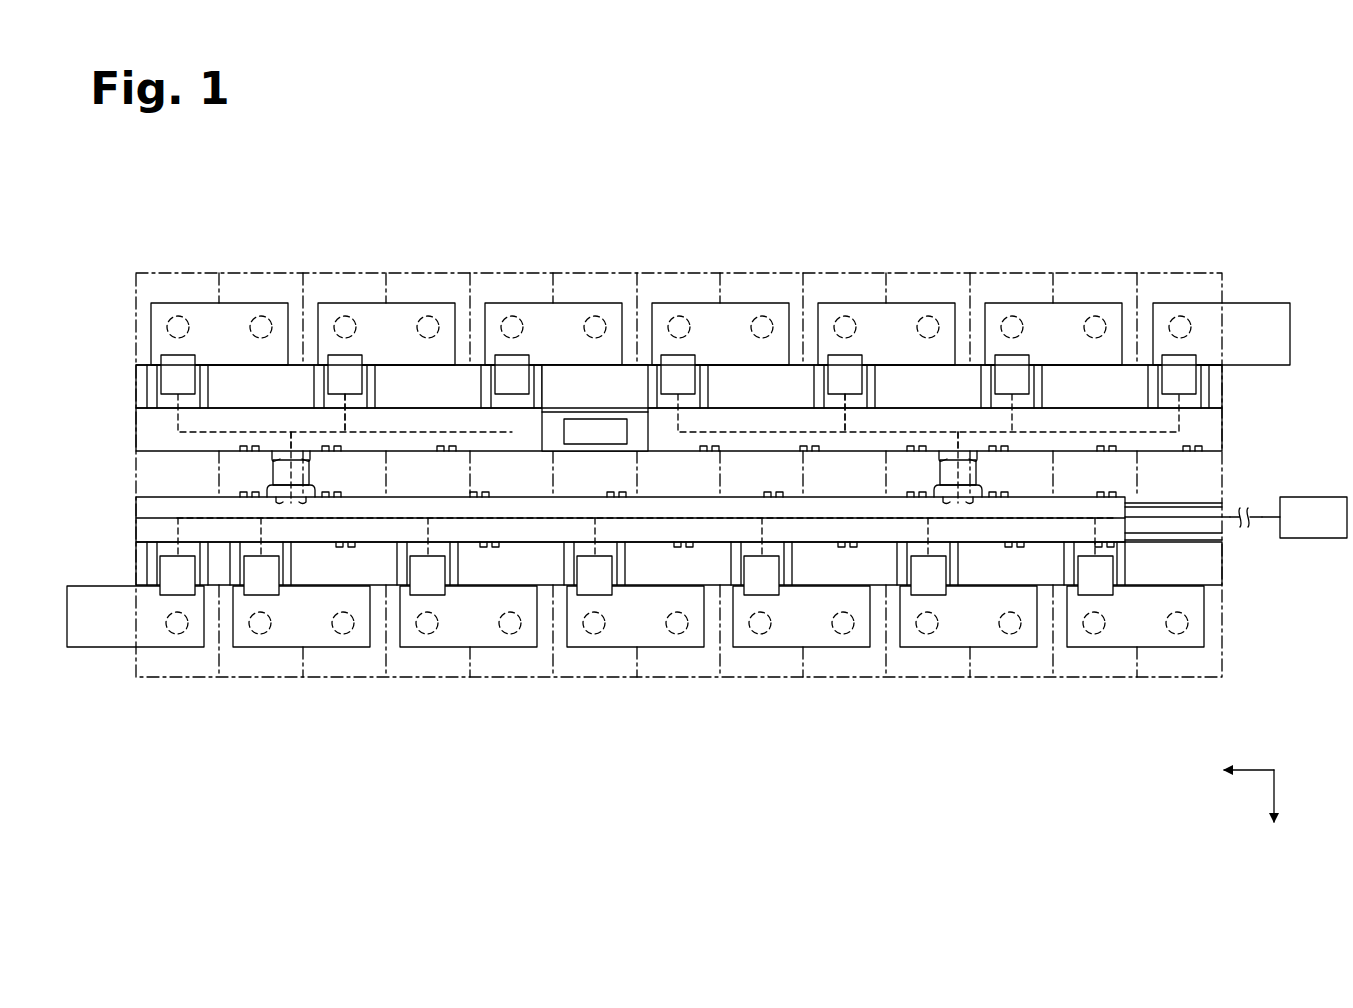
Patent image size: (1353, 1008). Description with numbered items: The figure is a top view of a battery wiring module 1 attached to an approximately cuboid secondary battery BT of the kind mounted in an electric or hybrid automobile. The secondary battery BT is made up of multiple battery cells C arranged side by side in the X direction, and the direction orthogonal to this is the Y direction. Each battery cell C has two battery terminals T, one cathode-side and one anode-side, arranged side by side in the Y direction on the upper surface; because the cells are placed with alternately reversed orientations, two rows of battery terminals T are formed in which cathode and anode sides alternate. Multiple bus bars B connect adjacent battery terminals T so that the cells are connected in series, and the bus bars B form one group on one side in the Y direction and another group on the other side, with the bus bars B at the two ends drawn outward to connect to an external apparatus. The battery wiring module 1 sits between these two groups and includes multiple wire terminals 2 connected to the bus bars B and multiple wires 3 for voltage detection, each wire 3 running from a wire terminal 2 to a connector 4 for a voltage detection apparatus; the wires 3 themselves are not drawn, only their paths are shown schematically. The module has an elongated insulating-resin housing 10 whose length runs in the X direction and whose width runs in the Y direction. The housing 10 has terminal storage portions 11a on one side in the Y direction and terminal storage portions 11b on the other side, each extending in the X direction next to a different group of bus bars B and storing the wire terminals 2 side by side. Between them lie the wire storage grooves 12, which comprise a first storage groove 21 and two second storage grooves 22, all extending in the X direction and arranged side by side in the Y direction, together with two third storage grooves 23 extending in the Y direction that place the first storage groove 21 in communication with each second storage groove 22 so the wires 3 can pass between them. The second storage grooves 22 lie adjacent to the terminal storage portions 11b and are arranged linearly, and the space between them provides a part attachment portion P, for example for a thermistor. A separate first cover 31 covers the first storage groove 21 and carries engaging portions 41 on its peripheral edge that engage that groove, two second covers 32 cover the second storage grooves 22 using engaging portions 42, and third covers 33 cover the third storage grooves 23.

The battery wiring module 1 is at (1222, 378).
The housing 10 is at (1222, 415).
The terminal storage portions 11a is at (132, 562).
The terminal storage portions 11b is at (132, 384).
The wire storage grooves 12 is at (132, 432).
The wire terminals 2 is at (512, 365).
The first storage groove 21 is at (700, 545).
The second storage grooves 22 is at (400, 385).
The third storage grooves 23 is at (309, 470).
The wires 3 is at (1234, 513).
The first cover 31 is at (620, 528).
The second covers 32 is at (303, 420).
The third covers 33 is at (268, 470).
The connector 4 is at (1313, 539).
The engaging portions 41 is at (772, 497).
The engaging portions 42 is at (455, 452).
The part attachment portion P is at (593, 430).
The bus bars B is at (230, 303).
The battery terminals T is at (176, 316).
The battery cells C is at (1055, 292).
The secondary battery BT is at (142, 270).
The X direction X is at (1235, 770).
The Y direction Y is at (1273, 814).